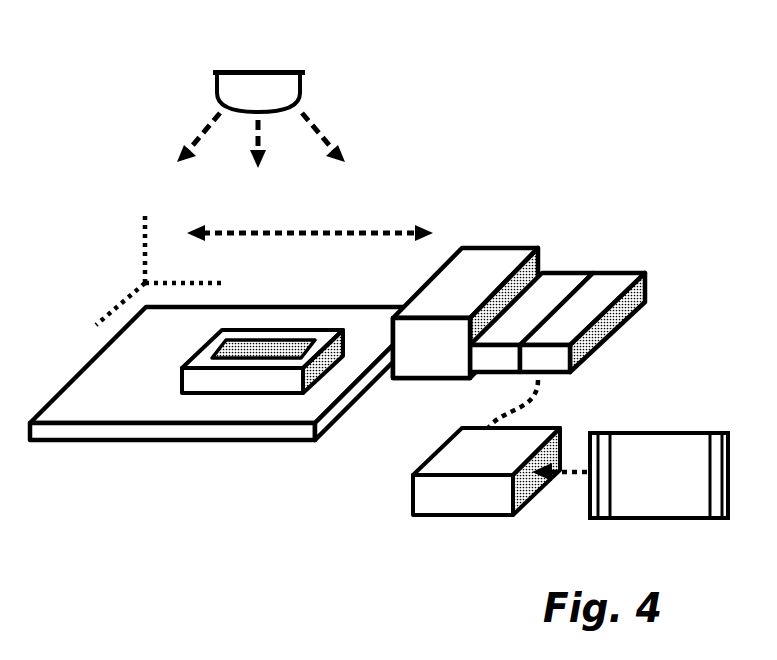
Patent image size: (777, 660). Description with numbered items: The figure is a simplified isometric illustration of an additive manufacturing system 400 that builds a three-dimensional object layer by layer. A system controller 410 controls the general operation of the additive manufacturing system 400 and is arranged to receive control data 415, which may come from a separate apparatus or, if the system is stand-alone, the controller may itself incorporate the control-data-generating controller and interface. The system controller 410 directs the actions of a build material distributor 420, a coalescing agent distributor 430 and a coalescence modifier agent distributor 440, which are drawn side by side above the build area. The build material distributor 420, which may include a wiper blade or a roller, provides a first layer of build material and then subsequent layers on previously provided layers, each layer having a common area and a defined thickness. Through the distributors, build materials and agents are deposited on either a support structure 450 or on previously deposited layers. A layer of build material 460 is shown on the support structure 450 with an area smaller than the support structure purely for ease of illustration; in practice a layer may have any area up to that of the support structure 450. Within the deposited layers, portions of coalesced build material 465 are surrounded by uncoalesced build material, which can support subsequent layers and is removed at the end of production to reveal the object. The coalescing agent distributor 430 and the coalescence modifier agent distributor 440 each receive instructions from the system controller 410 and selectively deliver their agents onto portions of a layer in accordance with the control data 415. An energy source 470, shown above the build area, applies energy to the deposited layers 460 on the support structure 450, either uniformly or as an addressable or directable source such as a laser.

The additive manufacturing system 400 is at (90, 105).
The system controller 410 is at (413, 480).
The control data 415 is at (659, 475).
The build material distributor 420 is at (523, 248).
The coalescing agent distributor 430 is at (567, 272).
The coalescence modifier agent distributor 440 is at (622, 273).
The support structure 450 is at (290, 442).
The layer of build material 460 is at (182, 378).
The coalesced build material 465 is at (217, 352).
The energy source 470 is at (258, 70).